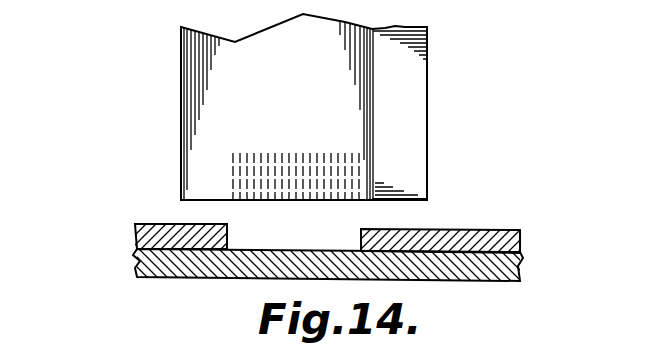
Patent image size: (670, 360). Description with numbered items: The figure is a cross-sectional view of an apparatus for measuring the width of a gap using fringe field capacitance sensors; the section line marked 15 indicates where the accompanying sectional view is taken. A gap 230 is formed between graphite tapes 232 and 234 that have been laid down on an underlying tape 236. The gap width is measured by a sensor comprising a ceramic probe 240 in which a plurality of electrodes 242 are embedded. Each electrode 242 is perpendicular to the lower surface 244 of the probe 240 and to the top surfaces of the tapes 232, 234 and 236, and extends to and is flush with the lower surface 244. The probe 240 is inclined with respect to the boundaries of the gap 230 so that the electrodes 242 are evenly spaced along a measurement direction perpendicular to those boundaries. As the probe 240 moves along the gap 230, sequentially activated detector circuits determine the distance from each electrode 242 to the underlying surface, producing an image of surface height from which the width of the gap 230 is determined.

The section line 15- 15 is at (54, 150).
The gap 230 is at (255, 232).
The graphite tape 232 is at (150, 239).
The graphite tape 234 is at (512, 250).
The underlying tape 236 is at (512, 273).
The ceramic probe 240 is at (170, 108).
The electrodes 242 is at (378, 181).
The lower surface 244 is at (410, 203).